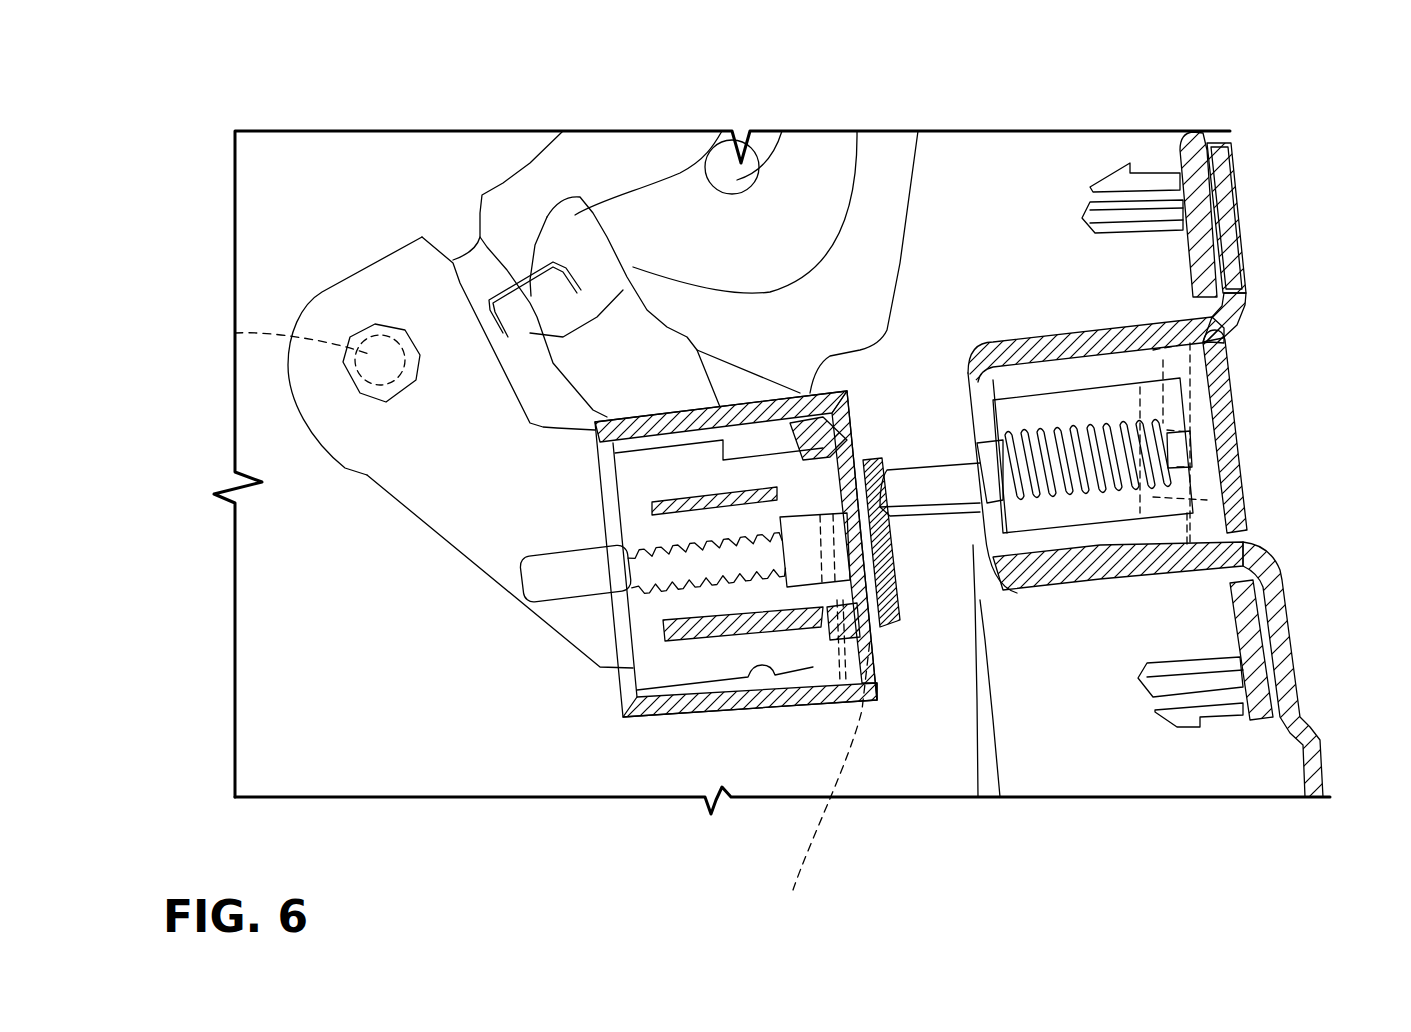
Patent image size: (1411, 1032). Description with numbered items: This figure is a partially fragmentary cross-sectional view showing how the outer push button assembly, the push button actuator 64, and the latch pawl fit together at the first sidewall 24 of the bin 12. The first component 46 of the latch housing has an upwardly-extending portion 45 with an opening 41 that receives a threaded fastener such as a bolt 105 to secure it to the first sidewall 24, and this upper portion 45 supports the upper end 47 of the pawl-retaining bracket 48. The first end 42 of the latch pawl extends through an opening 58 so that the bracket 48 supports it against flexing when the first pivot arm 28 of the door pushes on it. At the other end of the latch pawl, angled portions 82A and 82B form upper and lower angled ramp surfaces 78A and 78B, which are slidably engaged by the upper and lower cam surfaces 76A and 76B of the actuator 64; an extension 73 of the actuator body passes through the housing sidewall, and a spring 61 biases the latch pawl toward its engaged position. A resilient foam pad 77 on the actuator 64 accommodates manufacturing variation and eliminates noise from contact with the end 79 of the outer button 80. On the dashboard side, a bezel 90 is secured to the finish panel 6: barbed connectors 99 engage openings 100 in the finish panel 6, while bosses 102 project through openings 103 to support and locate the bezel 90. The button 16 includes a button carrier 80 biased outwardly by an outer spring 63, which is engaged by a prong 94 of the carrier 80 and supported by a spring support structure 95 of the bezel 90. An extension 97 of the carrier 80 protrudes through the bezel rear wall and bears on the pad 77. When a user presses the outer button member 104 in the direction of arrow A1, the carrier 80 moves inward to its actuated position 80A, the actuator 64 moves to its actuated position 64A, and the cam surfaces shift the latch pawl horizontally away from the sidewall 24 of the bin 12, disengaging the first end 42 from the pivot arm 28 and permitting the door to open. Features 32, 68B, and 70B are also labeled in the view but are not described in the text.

The bin 12 is at (288, 202).
The first sidewall 24 is at (323, 255).
The opening 41 is at (235, 333).
The bolt 105 is at (353, 367).
The upwardly-extending portion 45 is at (380, 437).
The first component 46 is at (395, 505).
The upper end 47 is at (463, 242).
The pawl-retaining bracket 48 is at (450, 246).
The first pivot arm 28 is at (503, 240).
The opening 58 is at (625, 190).
The first end 42 is at (562, 196).
The pivot hole 32 is at (766, 150).
The spring 61 is at (607, 617).
The extension 73 is at (545, 588).
The upper angled ramp surface 78A is at (710, 498).
The lower angled ramp surface 78B is at (800, 606).
The upper cam surface 76A is at (815, 513).
The lower cam surface 76B is at (773, 710).
The angled portion 82A is at (757, 513).
The angled portion 82B is at (790, 630).
The push button actuator 64 is at (800, 710).
The actuated position 64A is at (821, 784).
The foam pad 77 is at (890, 707).
The end 79 is at (897, 530).
The extension 97 is at (933, 520).
The lower housing wall 70B is at (673, 702).
The lower housing flange 68B is at (713, 710).
The outer spring 63 is at (1247, 323).
The bezel 90 is at (1253, 263).
The spring support structure 95 is at (1003, 445).
The outer button member 104 is at (1233, 393).
The button 16 is at (1237, 418).
The arrow A1 is at (1400, 414).
The prong 94 is at (1227, 450).
The button carrier 80 is at (1223, 497).
The actuated position 80A is at (1223, 508).
The finish panel 6 is at (1168, 150).
The openings 103 is at (1237, 190).
The openings 100 is at (1157, 167).
The bosses 102 is at (1078, 213).
The barbed connectors 99 is at (1108, 183).